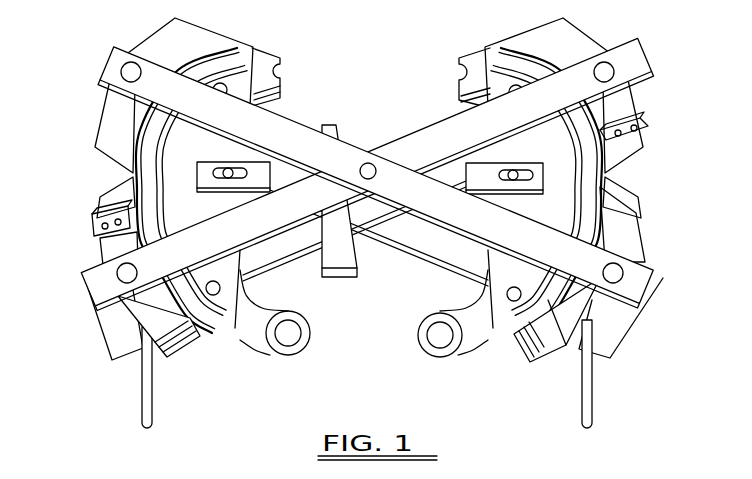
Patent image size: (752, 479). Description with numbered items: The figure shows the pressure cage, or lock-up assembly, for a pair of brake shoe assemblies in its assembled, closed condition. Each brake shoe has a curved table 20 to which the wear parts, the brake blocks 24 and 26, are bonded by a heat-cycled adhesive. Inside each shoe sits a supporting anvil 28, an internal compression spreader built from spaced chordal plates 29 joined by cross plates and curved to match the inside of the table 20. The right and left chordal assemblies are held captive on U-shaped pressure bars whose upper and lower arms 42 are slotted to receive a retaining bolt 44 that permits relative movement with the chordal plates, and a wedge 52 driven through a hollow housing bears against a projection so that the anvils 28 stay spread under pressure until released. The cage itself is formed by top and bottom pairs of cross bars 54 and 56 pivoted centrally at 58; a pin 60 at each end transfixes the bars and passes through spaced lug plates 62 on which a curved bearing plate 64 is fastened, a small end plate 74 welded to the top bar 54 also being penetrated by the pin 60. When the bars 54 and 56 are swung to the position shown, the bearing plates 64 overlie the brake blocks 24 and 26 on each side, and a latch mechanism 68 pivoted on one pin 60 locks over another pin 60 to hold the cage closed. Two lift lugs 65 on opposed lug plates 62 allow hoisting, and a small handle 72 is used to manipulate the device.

The table 20 is at (157, 145).
The brake block 24 is at (147, 160).
The brake block 26 is at (130, 245).
The supporting anvil 28 is at (233, 65).
The chordal plate 29 is at (173, 188).
The arm 42 is at (222, 165).
The retaining bolt 44 is at (235, 178).
The wedge 52 is at (337, 284).
The cross bar 54 is at (284, 252).
The cross bar 56 is at (458, 225).
The central pivot 58 is at (368, 163).
The pin 60 is at (131, 72).
The lug plate 62 is at (202, 35).
The bearing plate 64 is at (529, 330).
The lift lug 65 is at (95, 230).
The latch mechanism 68 is at (108, 345).
The handle 72 is at (143, 402).
The end plate 74 is at (650, 62).